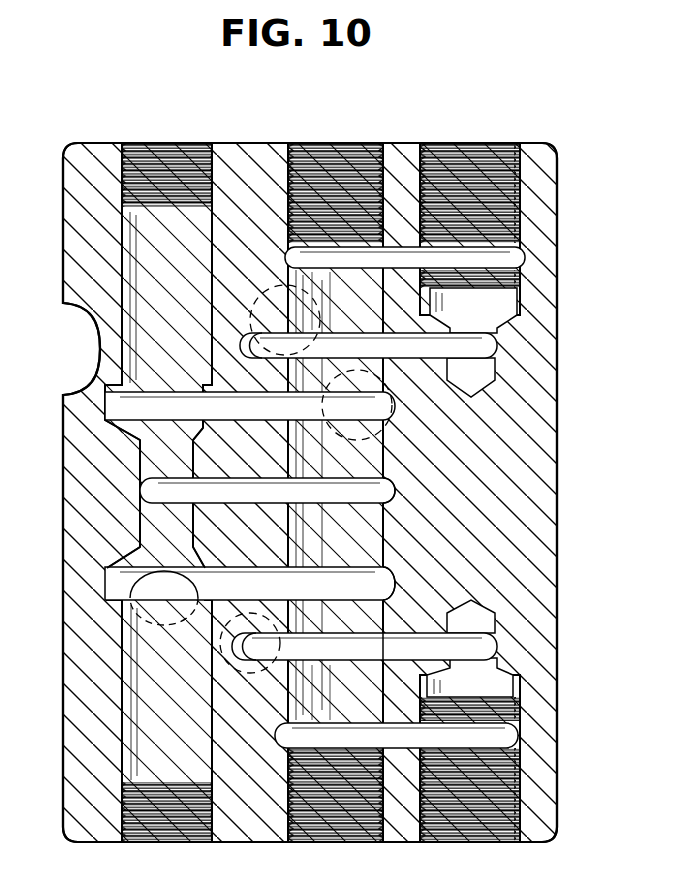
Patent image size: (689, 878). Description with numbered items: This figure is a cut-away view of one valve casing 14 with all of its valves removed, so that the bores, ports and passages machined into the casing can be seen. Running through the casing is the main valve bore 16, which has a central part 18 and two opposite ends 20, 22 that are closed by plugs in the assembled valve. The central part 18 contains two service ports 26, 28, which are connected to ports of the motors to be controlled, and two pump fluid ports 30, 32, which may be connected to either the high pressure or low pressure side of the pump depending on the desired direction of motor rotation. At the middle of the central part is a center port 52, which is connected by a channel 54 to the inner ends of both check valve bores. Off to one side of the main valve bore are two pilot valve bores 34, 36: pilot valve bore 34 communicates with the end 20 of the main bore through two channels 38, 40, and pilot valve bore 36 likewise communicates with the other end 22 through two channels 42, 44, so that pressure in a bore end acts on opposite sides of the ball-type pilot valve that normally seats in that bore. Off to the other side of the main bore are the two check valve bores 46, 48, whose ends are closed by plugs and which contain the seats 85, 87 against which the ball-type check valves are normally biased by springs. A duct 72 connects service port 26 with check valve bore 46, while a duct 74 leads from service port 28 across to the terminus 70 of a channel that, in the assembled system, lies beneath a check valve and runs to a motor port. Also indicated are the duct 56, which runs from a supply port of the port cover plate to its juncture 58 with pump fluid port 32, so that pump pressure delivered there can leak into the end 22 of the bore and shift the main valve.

The valve casing 14 is at (544, 530).
The main valve bore 16 is at (386, 553).
The central part of main valve bore 18 is at (374, 533).
The end of main valve bore 20 is at (361, 299).
The end of main valve bore 22 is at (355, 712).
The service port 26 is at (388, 407).
The service port 28 is at (365, 578).
The pump fluid port 30 is at (262, 354).
The pump fluid port 32 is at (316, 656).
The pilot valve bore 34 is at (508, 303).
The pilot valve bore 36 is at (508, 688).
The channel 38 is at (518, 262).
The channel 40 is at (503, 350).
The channel 42 is at (512, 738).
The channel 44 is at (505, 648).
The check valve bore 46 is at (120, 305).
The check valve bore 48 is at (125, 665).
The center port 52 is at (368, 496).
The channel 54 is at (145, 490).
The duct 56 is at (216, 625).
The juncture 58 is at (242, 652).
The terminus 70 is at (198, 587).
The duct 72 is at (258, 420).
The duct 74 is at (293, 597).
The seat 85 is at (132, 437).
The seat 87 is at (132, 548).